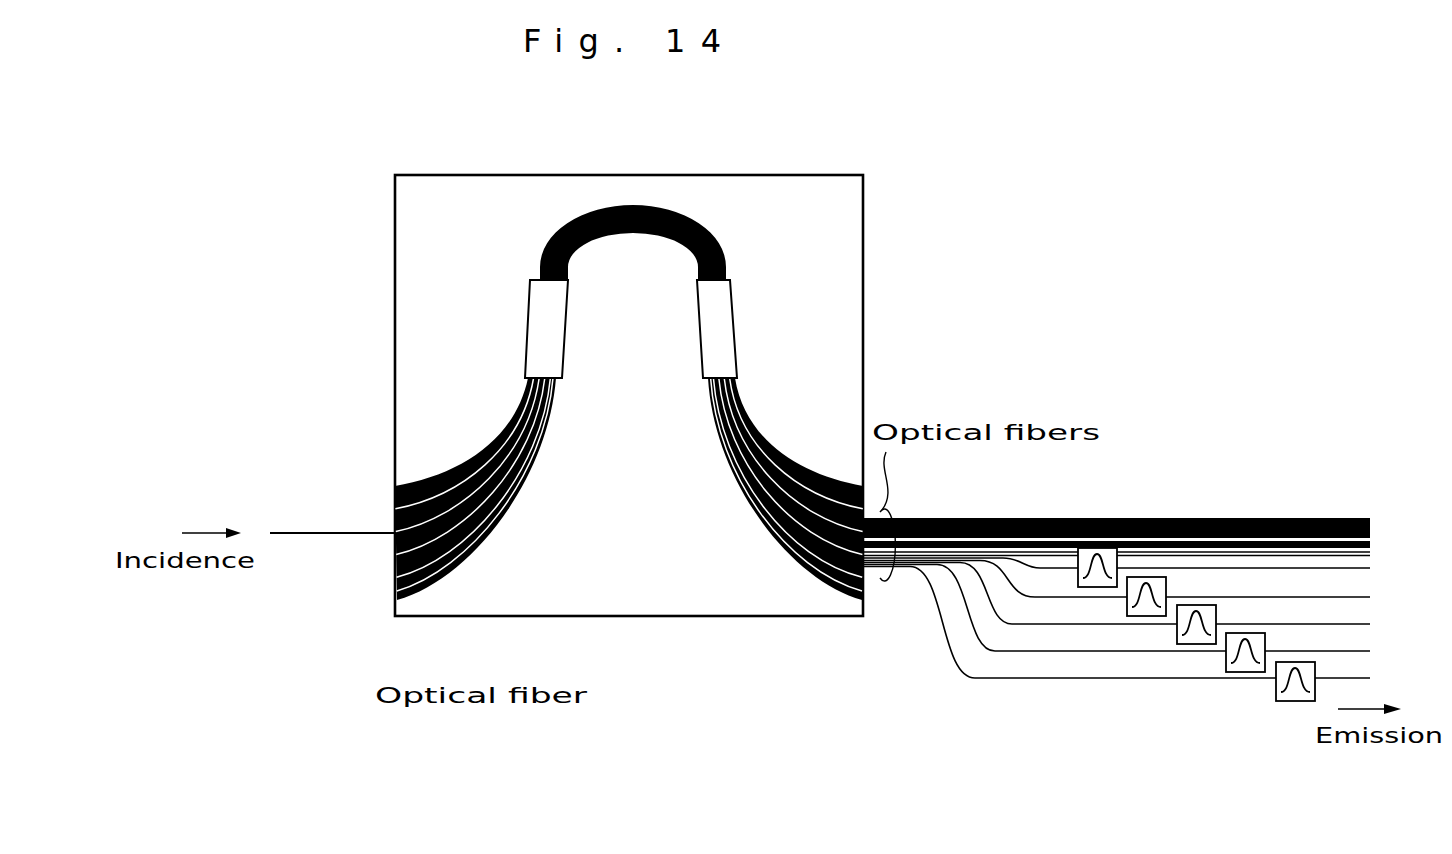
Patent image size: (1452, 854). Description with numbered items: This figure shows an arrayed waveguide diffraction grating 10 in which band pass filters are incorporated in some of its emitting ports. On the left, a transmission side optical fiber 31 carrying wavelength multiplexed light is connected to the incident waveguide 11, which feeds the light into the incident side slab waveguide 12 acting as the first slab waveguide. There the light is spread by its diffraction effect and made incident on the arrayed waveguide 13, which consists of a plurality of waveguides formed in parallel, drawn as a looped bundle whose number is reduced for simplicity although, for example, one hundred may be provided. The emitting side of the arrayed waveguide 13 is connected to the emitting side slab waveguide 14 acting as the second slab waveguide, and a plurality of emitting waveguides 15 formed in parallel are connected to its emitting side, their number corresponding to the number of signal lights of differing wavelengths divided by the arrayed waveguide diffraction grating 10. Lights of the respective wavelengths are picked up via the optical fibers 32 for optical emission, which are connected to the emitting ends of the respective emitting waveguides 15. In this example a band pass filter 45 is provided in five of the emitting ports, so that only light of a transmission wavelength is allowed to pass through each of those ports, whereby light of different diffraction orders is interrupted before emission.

The arrayed waveguide diffraction grating 10 is at (791, 210).
The incident waveguide 11 is at (455, 590).
The incident side slab waveguide 12 is at (536, 343).
The arrayed waveguide 13 is at (608, 207).
The emitting side slab waveguide 14 is at (727, 342).
The emitting waveguide 15 is at (803, 590).
The transmission side optical fiber 31 is at (345, 534).
The optical fibers for optical emission 32 is at (950, 658).
The band pass filter 45 is at (1098, 587).